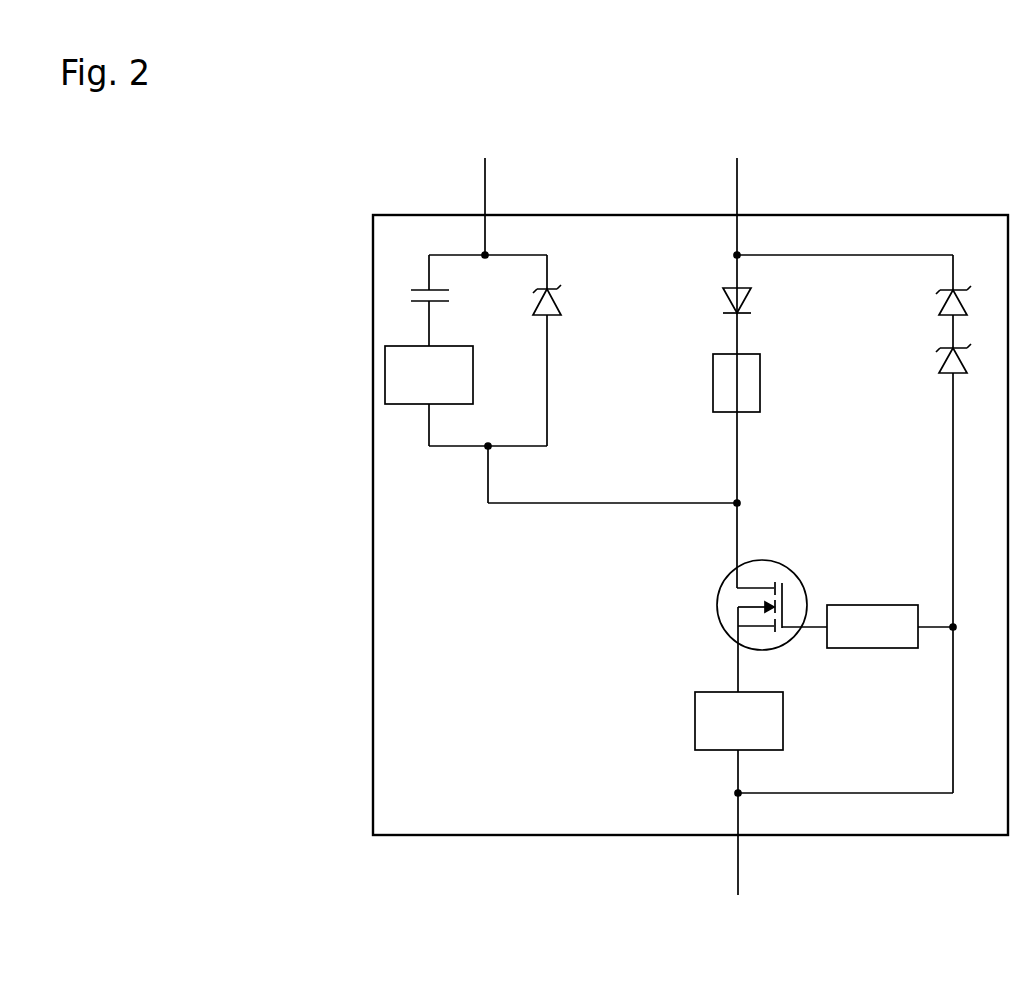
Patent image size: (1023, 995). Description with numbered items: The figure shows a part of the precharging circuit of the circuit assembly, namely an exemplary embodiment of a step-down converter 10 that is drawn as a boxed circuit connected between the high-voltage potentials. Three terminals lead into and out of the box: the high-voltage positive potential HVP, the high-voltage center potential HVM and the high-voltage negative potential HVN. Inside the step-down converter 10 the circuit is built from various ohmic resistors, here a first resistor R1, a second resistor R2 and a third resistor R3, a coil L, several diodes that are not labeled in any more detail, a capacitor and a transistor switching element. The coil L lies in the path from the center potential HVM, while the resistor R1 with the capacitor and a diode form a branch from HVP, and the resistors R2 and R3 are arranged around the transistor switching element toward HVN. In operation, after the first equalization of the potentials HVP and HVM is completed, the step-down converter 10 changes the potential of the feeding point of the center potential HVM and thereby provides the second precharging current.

The step-down converter 10 is at (293, 562).
The ohmic resistor R1 is at (429, 375).
The ohmic resistor R2 is at (872, 626).
The ohmic resistor R3 is at (739, 721).
The coil L is at (736, 383).
The high-voltage positive HVP is at (485, 181).
The high-voltage center potential HVM is at (737, 347).
The high-voltage negative HVN is at (739, 849).